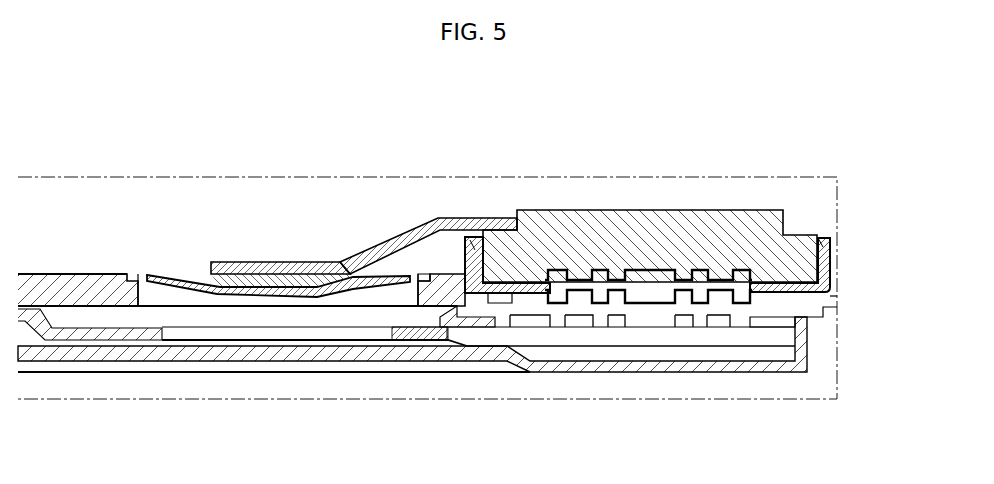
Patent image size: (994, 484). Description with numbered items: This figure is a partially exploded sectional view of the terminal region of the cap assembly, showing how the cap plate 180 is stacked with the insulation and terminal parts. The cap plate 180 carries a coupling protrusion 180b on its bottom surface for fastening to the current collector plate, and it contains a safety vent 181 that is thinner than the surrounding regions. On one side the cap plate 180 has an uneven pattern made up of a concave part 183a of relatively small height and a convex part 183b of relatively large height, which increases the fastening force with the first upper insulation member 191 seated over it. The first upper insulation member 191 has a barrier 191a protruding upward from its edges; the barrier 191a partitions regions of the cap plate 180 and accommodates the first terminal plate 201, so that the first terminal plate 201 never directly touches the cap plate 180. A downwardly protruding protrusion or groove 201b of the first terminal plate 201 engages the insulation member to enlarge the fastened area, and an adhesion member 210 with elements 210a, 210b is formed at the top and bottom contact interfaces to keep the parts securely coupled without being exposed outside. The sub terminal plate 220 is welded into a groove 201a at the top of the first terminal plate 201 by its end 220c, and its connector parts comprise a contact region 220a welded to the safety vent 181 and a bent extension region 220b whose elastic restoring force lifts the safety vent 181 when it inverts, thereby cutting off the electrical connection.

The cap plate 180 is at (842, 296).
The coupling protrusion 180b is at (502, 328).
The safety vent 181 is at (274, 290).
The concave part 183a is at (722, 299).
The convex part 183b is at (697, 309).
The first upper insulation member 191 is at (837, 256).
The barrier 191a is at (823, 238).
The first terminal plate 201 is at (787, 203).
The groove 201a is at (512, 213).
The protrusion or groove 201b is at (716, 263).
The adhesion member 210 is at (692, 108).
The adhesion member element 210a is at (598, 269).
The adhesion member element 210b is at (628, 269).
The sub terminal plate 220 is at (468, 108).
The contact region 220a is at (278, 262).
The extension region 220b is at (381, 244).
The end 220c is at (472, 219).